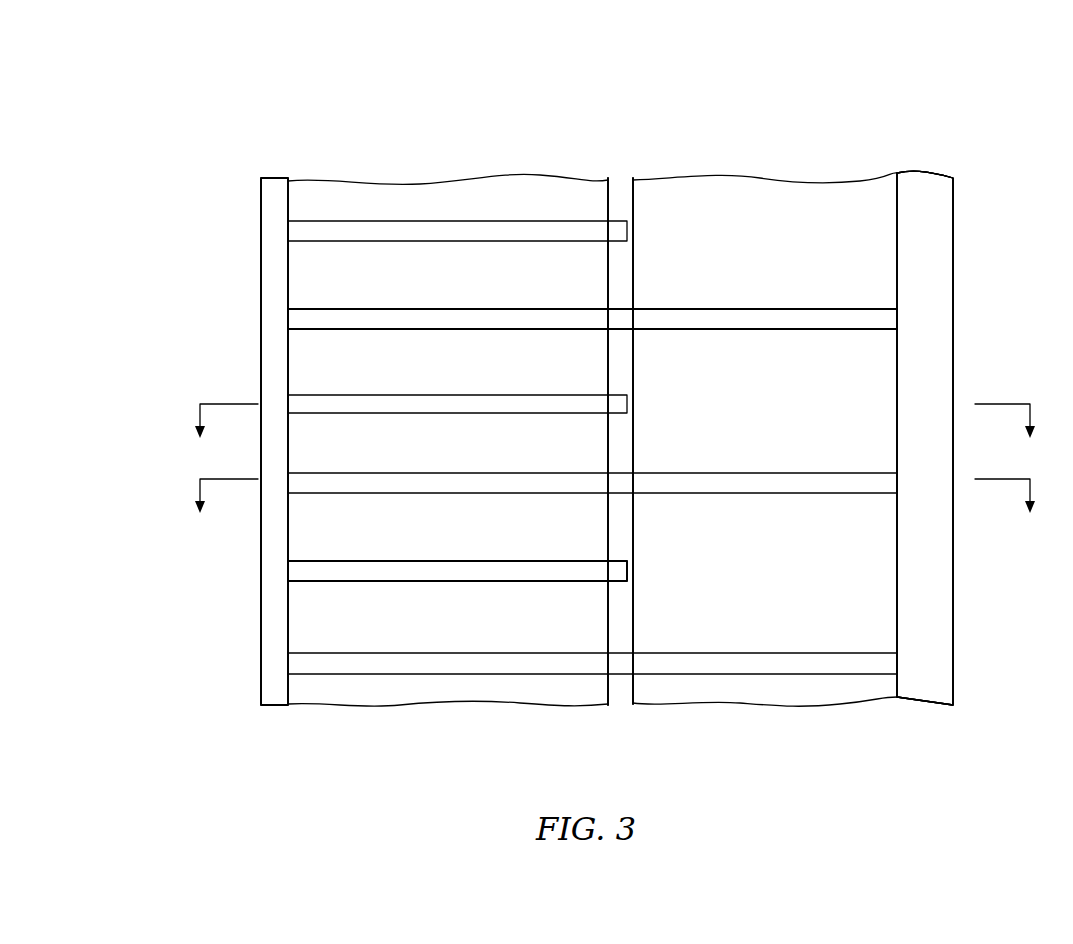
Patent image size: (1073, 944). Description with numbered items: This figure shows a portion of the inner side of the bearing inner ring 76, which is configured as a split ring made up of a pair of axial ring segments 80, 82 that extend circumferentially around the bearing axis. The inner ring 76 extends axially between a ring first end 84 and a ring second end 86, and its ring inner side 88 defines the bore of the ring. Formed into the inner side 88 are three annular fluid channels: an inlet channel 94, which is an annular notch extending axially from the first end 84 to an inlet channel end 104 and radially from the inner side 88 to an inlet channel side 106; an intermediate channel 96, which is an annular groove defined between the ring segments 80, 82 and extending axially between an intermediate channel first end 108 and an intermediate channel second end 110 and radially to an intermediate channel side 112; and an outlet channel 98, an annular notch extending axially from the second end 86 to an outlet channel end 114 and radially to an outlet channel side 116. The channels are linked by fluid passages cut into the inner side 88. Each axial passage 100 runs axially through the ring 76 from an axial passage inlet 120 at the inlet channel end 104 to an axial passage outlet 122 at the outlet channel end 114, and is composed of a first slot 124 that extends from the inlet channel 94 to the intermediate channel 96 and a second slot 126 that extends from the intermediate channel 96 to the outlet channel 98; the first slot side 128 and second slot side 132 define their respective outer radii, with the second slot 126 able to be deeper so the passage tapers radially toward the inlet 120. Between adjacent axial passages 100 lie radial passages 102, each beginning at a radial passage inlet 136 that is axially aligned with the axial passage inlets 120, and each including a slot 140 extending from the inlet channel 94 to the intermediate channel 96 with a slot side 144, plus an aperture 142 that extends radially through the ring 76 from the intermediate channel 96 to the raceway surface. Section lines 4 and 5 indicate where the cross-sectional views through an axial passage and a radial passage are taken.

The inner ring 76 is at (153, 152).
The axial ring segment 80 is at (446, 184).
The axial ring segment 82 is at (786, 179).
The ring first end 84 is at (261, 270).
The ring second end 86 is at (953, 262).
The ring inner side 88 is at (847, 208).
The inlet channel 94 is at (278, 686).
The intermediate channel 96 is at (620, 692).
The outlet channel 98 is at (918, 685).
The axial passage 100 is at (425, 320).
The radial passage 102 is at (468, 397).
The inlet channel end 104 is at (288, 628).
The inlet channel side 106 is at (272, 597).
The intermediate channel first end 108 is at (608, 630).
The intermediate channel second end 110 is at (633, 605).
The intermediate channel side 112 is at (624, 596).
The outlet channel end 114 is at (897, 620).
The outlet channel side 116 is at (930, 563).
The axial passage inlet 120 is at (288, 320).
The axial passage outlet 122 is at (897, 316).
The first slot 124 is at (370, 318).
The second slot 126 is at (716, 320).
The first slot side 128 is at (543, 320).
The second slot side 132 is at (800, 320).
The radial passage inlet 136 is at (288, 571).
The slot 140 is at (372, 570).
The aperture 142 is at (617, 570).
The slot side 144 is at (537, 570).
The section line 4- 4 is at (615, 512).
The section line 5- 5 is at (615, 435).